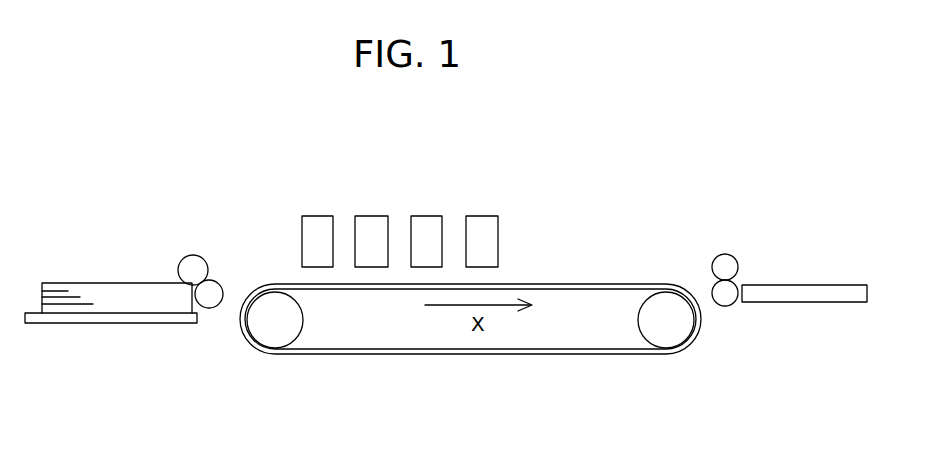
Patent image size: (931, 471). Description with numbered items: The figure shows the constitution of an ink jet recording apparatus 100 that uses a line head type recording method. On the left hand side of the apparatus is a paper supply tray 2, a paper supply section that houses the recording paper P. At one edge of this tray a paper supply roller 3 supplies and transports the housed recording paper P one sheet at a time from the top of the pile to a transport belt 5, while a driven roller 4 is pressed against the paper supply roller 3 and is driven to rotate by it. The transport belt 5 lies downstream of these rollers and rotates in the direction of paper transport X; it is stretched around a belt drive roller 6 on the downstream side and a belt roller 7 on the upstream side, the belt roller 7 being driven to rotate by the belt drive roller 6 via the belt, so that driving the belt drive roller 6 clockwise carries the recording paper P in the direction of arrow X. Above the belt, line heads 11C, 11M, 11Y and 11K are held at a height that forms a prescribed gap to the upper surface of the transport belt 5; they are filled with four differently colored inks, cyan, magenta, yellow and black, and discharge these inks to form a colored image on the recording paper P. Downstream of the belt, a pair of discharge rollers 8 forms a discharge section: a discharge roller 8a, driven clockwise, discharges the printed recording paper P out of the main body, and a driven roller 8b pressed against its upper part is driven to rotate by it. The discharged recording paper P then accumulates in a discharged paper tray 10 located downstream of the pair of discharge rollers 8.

The ink jet recording apparatus 100 is at (246, 218).
The paper supply tray 2 is at (97, 324).
The recording paper P is at (110, 293).
The paper supply roller 3 is at (193, 268).
The driven roller 4 is at (210, 297).
The transport belt 5 is at (457, 356).
The belt drive roller 6 is at (668, 337).
The belt roller 7 is at (279, 335).
The line head 11C is at (321, 223).
The line head 11M is at (374, 223).
The line head 11Y is at (427, 223).
The line head 11K is at (482, 223).
The pair of discharge rollers 8 is at (699, 275).
The discharge roller 8a is at (727, 303).
The driven roller 8b is at (726, 267).
The discharged paper tray 10 is at (813, 294).